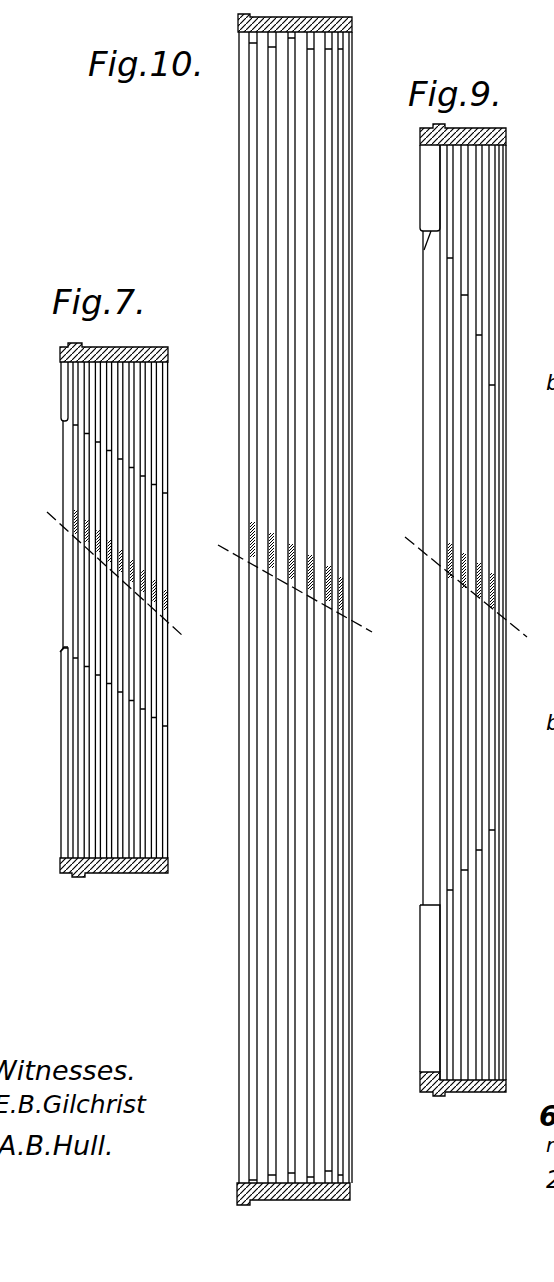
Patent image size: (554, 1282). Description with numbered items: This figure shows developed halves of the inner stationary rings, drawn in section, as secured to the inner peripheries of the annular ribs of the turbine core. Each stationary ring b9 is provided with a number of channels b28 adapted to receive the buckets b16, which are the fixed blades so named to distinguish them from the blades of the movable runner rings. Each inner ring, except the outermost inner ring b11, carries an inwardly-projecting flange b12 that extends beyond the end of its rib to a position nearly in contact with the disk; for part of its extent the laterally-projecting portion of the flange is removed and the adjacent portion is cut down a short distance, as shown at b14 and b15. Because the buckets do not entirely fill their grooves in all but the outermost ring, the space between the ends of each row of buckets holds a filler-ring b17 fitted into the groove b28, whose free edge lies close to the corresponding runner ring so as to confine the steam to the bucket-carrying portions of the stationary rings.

In FIG. 7, the stationary ring b9 is at (121, 653).
In FIG. 9, the stationary ring b9 is at (469, 716).
In FIG. 10, the outermost inner ring b11 is at (311, 607).
In FIG. 7, the inwardly-projecting flange b12 is at (60, 394).
In FIG. 9, the inwardly-projecting flange b12 is at (426, 160).
In FIG. 7, the cut-down portion b14 is at (65, 631).
In FIG. 9, the cut-down portion b14 is at (421, 253).
In FIG. 7, the cut-down portion b15 is at (64, 577).
In FIG. 9, the cut-down portion b15 is at (423, 386).
In FIG. 7, the bucket b16 is at (88, 514).
In FIG. 10, the bucket b16 is at (270, 521).
In FIG. 9, the bucket b16 is at (471, 575).
In FIG. 7, the filler-ring b17 is at (147, 388).
In FIG. 9, the filler-ring b17 is at (452, 250).
In FIG. 7, the channel b28 is at (122, 868).
In FIG. 10, the channel b28 is at (352, 1190).
In FIG. 9, the channel b28 is at (491, 1092).